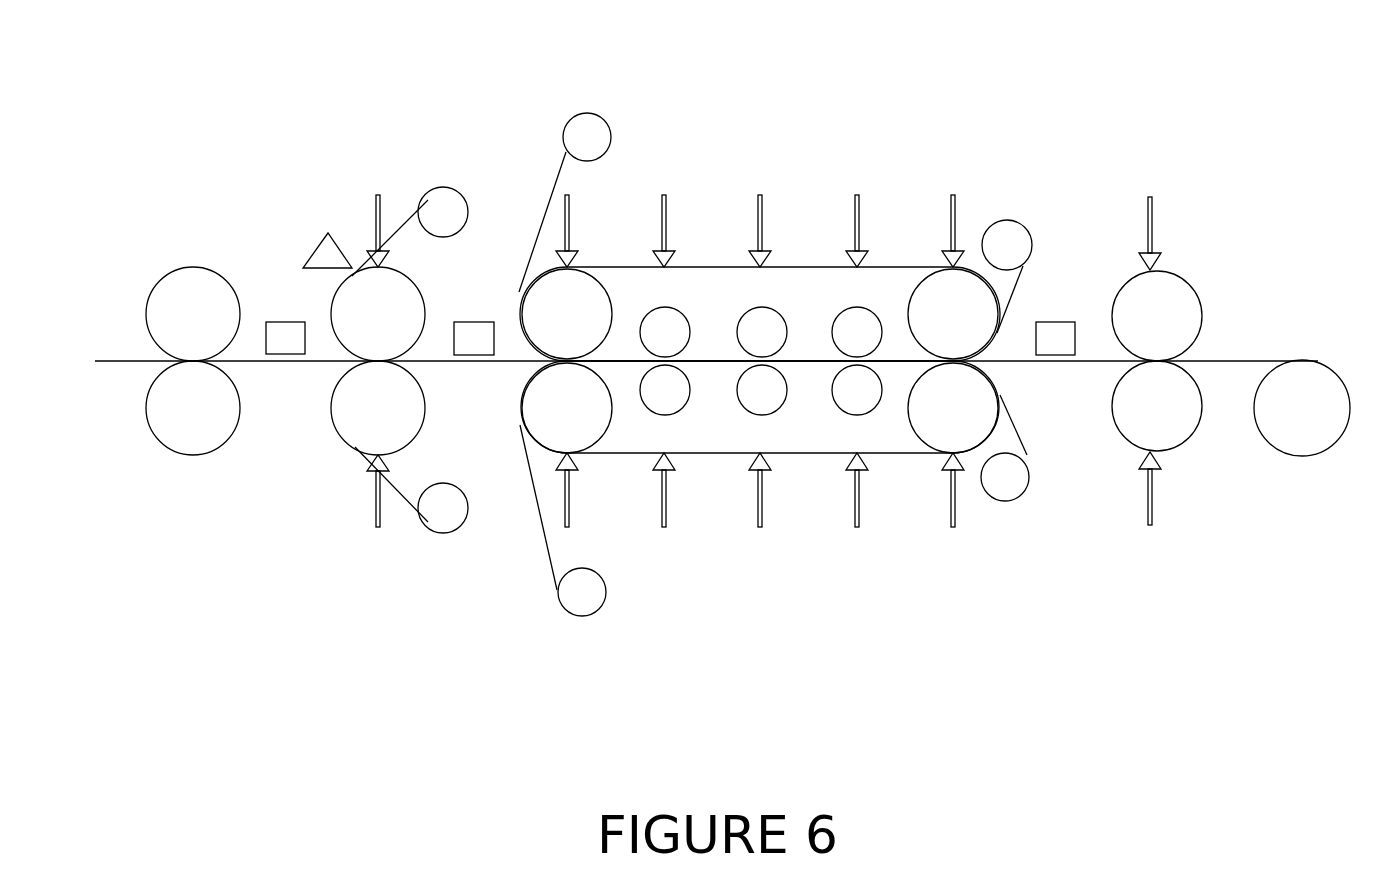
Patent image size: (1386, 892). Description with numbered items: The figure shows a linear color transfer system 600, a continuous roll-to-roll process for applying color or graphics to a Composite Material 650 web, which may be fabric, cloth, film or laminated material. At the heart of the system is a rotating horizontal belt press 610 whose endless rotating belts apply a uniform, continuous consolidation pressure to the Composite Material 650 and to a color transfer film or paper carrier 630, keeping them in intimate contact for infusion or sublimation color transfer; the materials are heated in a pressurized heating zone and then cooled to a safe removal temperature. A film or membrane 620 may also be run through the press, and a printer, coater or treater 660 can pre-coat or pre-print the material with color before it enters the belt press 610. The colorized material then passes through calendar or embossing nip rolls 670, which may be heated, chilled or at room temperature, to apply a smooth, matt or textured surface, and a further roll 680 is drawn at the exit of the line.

The linear color transfer system 600 is at (262, 23).
The rotating horizontal belt press 610 is at (733, 266).
The film or membrane 620 is at (450, 188).
The color transfer carrier 630 is at (592, 112).
The Composite Material 650 is at (113, 364).
The printer, coater or treater 660 is at (293, 318).
The calendar or embossing rolls 670 is at (190, 265).
The roller 680 is at (1267, 443).